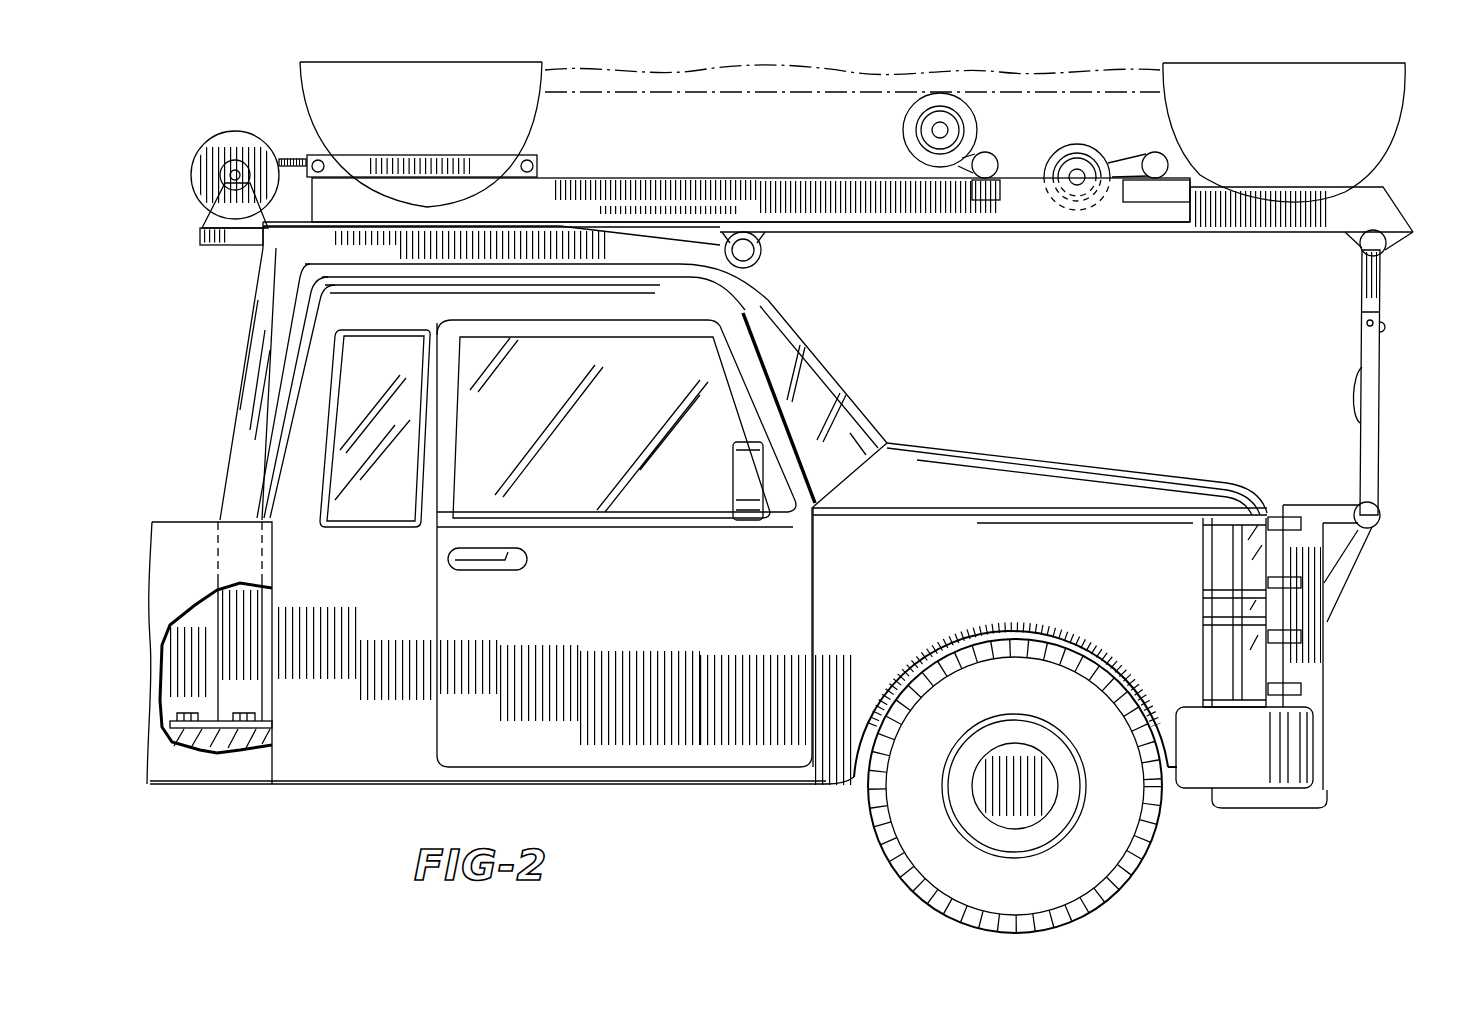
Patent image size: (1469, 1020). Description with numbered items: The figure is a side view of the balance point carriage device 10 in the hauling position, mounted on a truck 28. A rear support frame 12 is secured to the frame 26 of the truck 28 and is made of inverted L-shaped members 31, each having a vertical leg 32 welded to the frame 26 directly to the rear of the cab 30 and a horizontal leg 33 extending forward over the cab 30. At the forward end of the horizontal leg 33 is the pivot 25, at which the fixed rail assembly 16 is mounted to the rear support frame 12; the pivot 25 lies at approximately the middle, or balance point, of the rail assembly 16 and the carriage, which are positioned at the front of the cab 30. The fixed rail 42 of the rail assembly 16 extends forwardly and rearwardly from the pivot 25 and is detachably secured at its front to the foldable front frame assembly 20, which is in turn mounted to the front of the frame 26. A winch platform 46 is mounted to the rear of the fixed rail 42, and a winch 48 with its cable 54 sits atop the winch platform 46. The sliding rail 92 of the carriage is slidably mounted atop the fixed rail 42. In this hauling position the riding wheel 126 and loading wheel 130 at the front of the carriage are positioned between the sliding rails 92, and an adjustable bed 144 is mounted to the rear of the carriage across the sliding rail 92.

The balance point carriage device 10 is at (1406, 165).
The rear support frame 12 is at (230, 380).
The rail assembly 16 is at (1232, 236).
The foldable front frame assembly 20 is at (1380, 425).
The pivot 25 is at (762, 250).
The frame 26 is at (218, 742).
The truck 28 is at (637, 615).
The cab 30 is at (637, 419).
The inverted L-shaped member 31 is at (273, 250).
The vertical leg 32 is at (240, 457).
The horizontal leg 33 is at (742, 275).
The fixed rail 42 is at (1288, 225).
The winch platform 46 is at (200, 236).
The winch 48 is at (250, 131).
The cable 54 is at (298, 158).
The sliding rail 92 is at (738, 190).
The riding wheel 126 is at (1090, 150).
The loading wheel 130 is at (977, 118).
The adjustable bed 144 is at (540, 166).